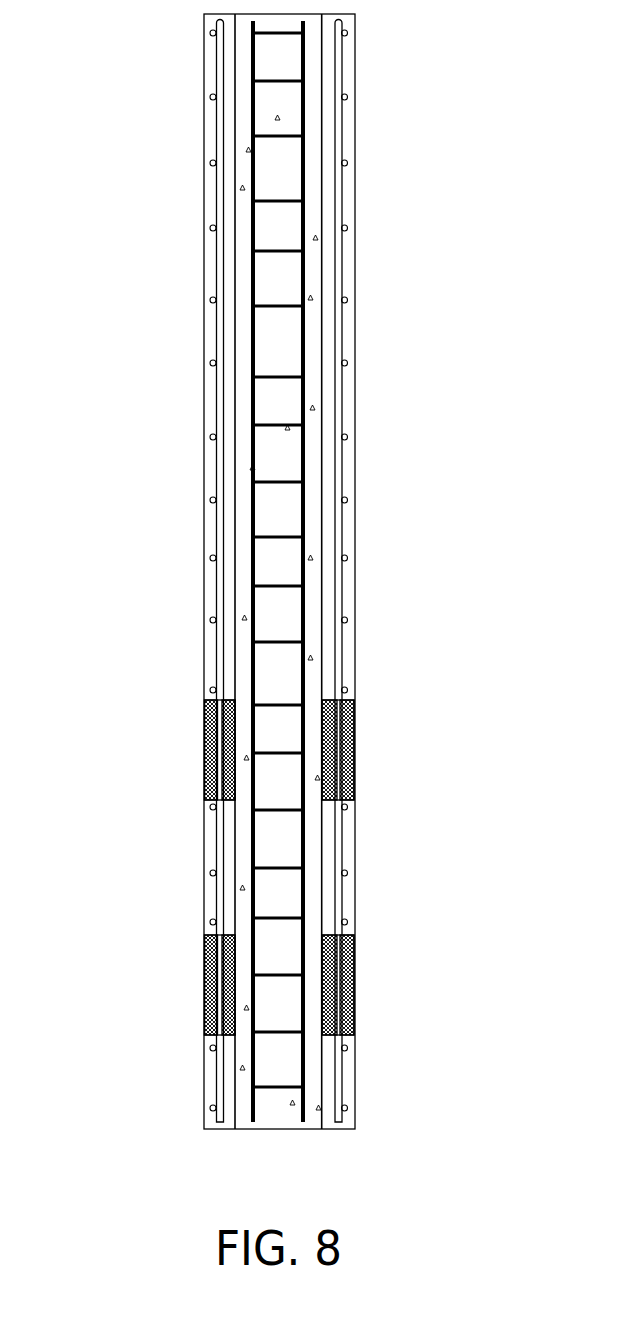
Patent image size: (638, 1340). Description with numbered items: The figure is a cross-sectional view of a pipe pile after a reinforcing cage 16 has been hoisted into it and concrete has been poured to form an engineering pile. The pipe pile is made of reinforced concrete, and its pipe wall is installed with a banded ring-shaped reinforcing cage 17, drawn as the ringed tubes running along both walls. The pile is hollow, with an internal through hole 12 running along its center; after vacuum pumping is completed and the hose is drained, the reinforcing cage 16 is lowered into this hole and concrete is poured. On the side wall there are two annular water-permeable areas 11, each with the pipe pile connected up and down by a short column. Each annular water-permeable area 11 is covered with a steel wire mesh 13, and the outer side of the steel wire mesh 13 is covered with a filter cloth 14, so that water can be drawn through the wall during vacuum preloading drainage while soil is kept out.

The annular water-permeable area 11 is at (207, 853).
The internal through hole 12 is at (184, 560).
The steel wire mesh 13 is at (196, 829).
The filter cloth 14 is at (205, 783).
The reinforcing cage 16 is at (183, 571).
The banded ring-shaped reinforcing cage 17 is at (206, 571).